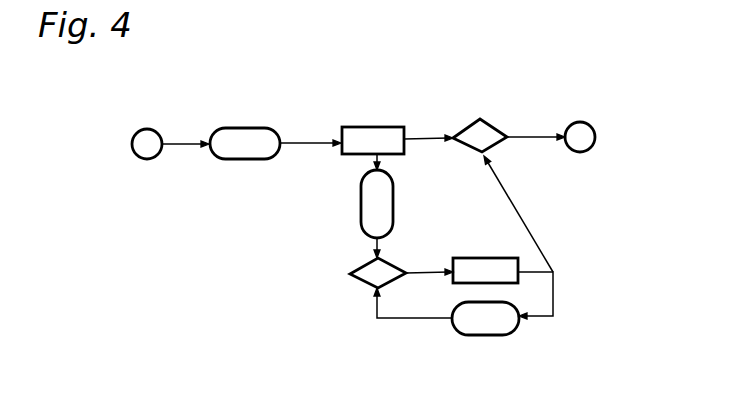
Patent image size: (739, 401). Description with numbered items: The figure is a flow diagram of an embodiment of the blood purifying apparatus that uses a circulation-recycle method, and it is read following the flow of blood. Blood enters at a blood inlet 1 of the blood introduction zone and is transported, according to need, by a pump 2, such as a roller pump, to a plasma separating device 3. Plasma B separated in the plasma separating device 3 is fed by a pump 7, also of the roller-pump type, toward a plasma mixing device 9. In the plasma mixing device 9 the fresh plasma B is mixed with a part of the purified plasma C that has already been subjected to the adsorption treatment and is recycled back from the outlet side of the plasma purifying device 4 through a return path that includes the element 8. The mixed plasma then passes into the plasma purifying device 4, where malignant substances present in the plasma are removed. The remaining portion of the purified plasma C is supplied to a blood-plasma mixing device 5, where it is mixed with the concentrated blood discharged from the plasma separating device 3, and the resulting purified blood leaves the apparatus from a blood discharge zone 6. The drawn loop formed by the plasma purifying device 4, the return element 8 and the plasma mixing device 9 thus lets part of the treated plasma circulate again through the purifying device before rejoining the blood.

The blood inlet 1 is at (146, 129).
The pump 2 is at (245, 128).
The plasma separating device 3 is at (373, 127).
The plasma purifying device 4 is at (480, 258).
The blood-plasma mixing device 5 is at (489, 119).
The blood discharge zone 6 is at (580, 122).
The pump 7 is at (393, 207).
The processing step 8 is at (495, 335).
The plasma mixing device 9 is at (396, 266).
The plasma B is at (381, 158).
The purified plasma C is at (553, 294).